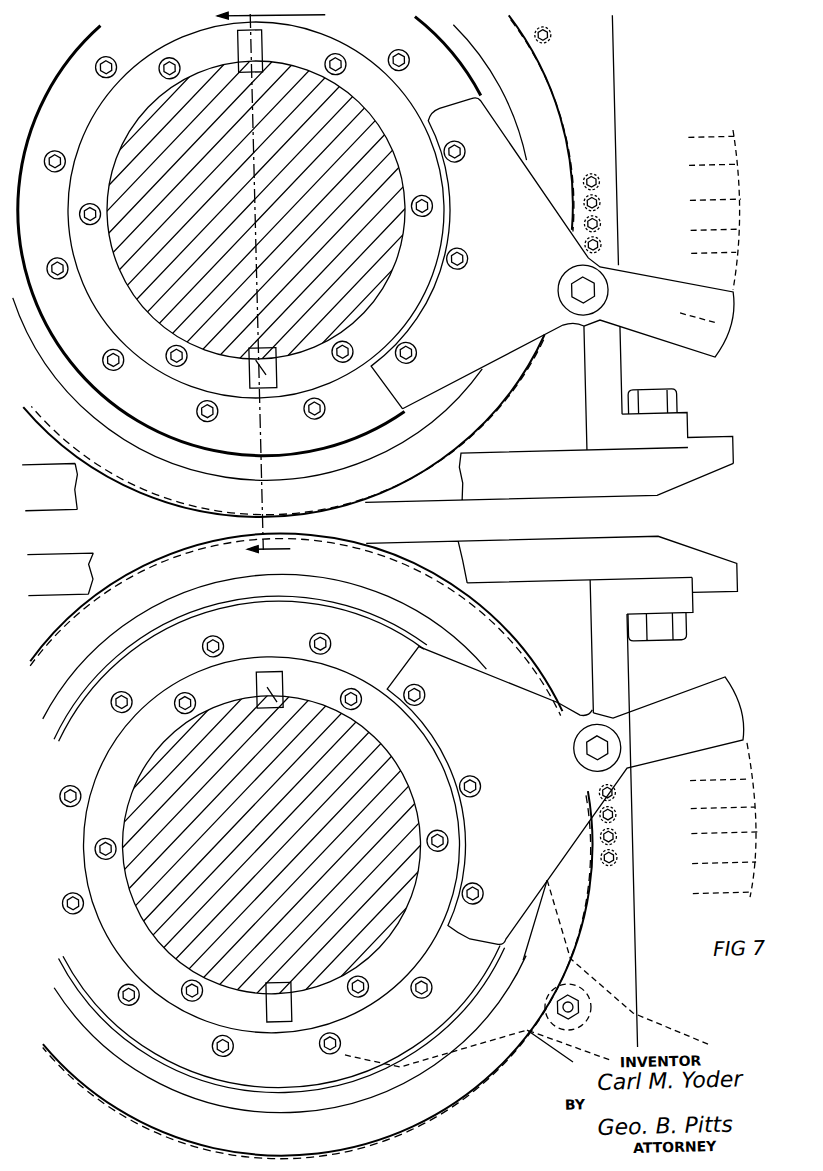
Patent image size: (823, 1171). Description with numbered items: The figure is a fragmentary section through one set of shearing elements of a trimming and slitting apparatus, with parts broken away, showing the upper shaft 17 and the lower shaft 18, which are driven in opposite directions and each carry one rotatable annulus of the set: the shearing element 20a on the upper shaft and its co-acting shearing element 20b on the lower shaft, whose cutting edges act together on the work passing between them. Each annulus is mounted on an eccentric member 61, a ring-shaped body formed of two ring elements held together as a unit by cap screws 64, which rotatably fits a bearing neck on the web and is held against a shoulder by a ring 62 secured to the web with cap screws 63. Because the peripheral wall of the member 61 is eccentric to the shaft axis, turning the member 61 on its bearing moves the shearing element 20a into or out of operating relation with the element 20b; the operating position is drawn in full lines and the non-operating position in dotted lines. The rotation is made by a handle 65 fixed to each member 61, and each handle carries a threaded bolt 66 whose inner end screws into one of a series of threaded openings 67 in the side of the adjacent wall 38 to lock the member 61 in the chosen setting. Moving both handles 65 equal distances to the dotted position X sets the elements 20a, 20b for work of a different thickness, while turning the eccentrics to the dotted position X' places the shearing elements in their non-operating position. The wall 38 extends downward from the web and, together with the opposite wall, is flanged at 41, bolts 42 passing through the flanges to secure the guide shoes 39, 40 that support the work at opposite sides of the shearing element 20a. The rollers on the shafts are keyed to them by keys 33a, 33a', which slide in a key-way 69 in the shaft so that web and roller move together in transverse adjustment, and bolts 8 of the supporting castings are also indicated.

The bolts 8 is at (287, 291).
The upper shaft 17 is at (354, 270).
The lower shaft 18 is at (361, 778).
The shearing element 20a is at (381, 473).
The co-acting shearing element 20b is at (316, 564).
The key 33a is at (266, 524).
The key 33a' is at (251, 528).
The rear wall 38 is at (600, 424).
The guide shoe 39 is at (415, 496).
The guide shoe 40 is at (409, 557).
The flange 41 is at (661, 452).
The bolts 42 is at (643, 412).
The eccentric member 61 is at (158, 410).
The ring 62 is at (157, 343).
The cap screws 63 is at (433, 204).
The cap screws 64 is at (97, 341).
The handle 65 is at (707, 356).
The threaded bolt 66 is at (592, 756).
The threaded openings 67 is at (593, 182).
The key-way 69 is at (250, 389).
The dotted-line handle position X is at (734, 513).
The dotted-line non-operating position X' is at (528, 972).